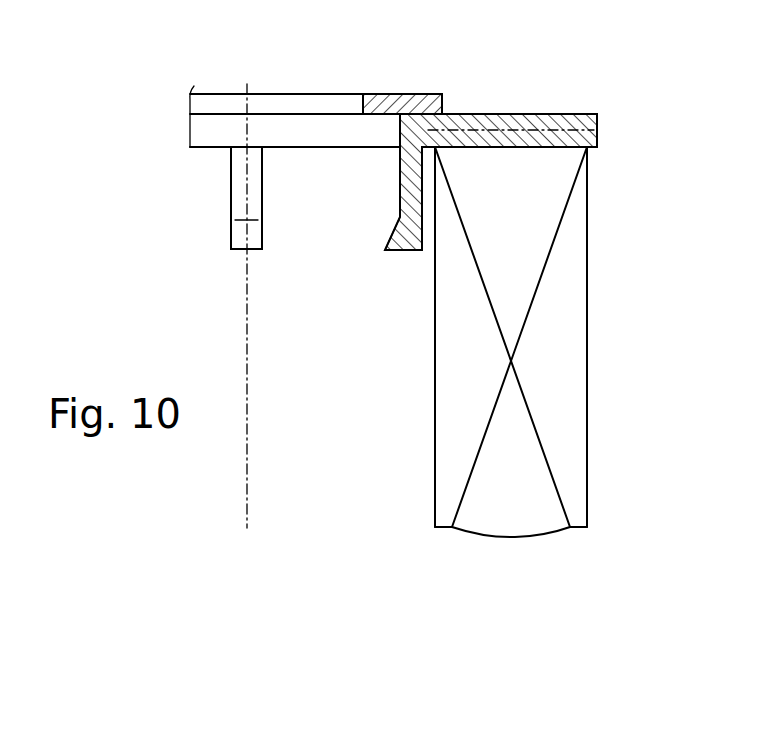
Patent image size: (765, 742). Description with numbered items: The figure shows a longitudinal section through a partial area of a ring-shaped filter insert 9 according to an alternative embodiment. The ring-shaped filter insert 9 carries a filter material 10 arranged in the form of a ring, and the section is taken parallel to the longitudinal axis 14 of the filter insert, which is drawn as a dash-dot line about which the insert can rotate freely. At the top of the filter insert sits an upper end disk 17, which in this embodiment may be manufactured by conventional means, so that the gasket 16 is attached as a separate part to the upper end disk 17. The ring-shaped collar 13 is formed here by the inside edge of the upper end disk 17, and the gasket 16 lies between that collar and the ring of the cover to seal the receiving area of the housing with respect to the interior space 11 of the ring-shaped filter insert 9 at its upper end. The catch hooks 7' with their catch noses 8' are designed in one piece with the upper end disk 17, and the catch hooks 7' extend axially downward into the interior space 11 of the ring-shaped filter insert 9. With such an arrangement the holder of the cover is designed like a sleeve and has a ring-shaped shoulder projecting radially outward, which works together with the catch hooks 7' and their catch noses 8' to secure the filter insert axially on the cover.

The catch hook 7' is at (321, 198).
The catch nose 8' is at (331, 261).
The ring-shaped filter insert 9 is at (546, 340).
The filter material 10 is at (578, 228).
The interior space 11 is at (356, 395).
The ring-shaped collar 13 is at (308, 132).
The longitudinal axis 14 is at (250, 457).
The gasket 16 is at (425, 93).
The upper end disk 17 is at (537, 113).